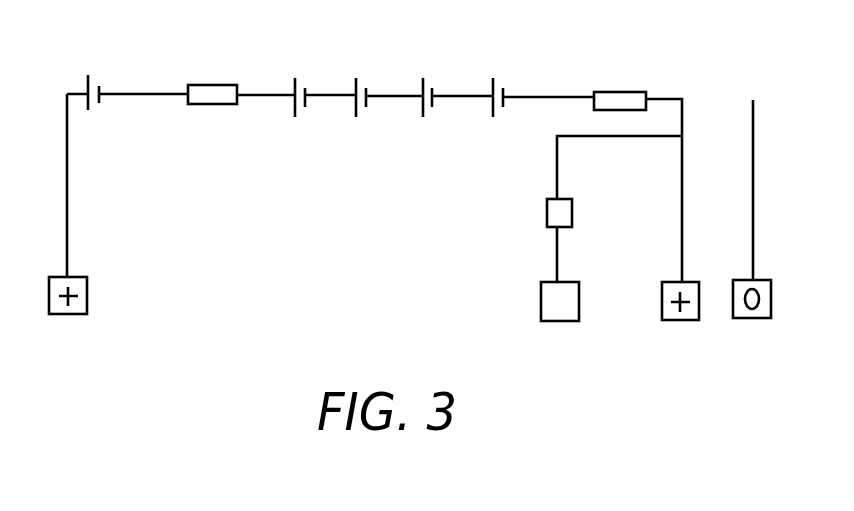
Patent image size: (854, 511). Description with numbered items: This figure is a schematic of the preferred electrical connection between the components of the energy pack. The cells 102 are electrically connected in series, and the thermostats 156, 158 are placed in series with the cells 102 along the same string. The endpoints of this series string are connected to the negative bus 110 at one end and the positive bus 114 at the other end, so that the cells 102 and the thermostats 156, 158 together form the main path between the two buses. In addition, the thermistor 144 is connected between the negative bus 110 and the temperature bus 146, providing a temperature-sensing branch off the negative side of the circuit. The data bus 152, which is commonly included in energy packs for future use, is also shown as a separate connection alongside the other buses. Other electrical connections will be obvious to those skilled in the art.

The cells 102 is at (104, 65).
The thermostat 156 is at (218, 84).
The thermostat 158 is at (623, 91).
The thermistor 144 is at (547, 211).
The temperature bus 146 is at (558, 322).
The negative bus 110 is at (682, 321).
The data bus 152 is at (762, 319).
The positive bus 114 is at (69, 315).